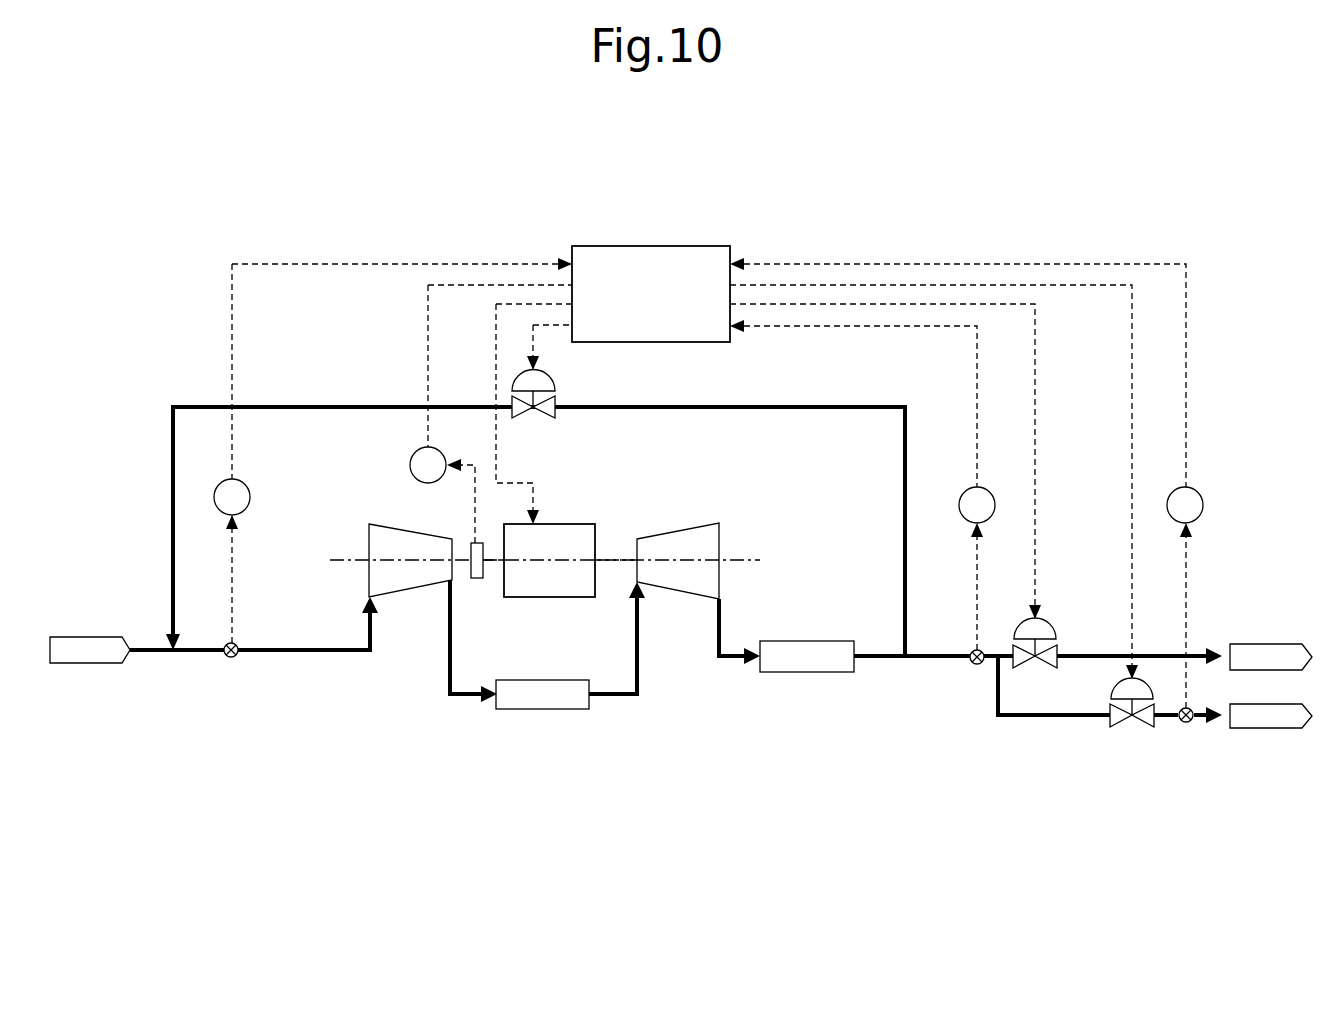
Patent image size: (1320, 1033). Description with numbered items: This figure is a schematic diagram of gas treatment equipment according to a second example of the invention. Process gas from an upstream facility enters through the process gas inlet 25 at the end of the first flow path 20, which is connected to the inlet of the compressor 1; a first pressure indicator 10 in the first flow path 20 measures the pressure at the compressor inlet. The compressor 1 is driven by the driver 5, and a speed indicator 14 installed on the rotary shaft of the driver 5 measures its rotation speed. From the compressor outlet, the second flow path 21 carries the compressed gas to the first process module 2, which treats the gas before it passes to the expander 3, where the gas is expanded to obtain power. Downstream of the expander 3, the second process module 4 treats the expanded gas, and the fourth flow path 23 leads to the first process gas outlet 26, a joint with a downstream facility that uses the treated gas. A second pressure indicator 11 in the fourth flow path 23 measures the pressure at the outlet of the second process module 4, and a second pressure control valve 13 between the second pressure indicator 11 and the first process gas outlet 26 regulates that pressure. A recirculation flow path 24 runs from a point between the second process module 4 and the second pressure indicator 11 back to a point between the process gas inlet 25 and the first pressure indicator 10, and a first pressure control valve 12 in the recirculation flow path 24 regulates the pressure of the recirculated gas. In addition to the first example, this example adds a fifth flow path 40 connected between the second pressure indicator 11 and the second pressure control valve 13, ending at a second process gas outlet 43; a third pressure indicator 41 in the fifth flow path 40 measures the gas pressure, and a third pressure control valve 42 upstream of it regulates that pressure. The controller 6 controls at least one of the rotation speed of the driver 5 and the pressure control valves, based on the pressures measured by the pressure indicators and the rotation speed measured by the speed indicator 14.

The compressor 1 is at (380, 524).
The first process module 2 is at (545, 680).
The expander 3 is at (665, 537).
The second process module 4 is at (808, 641).
The driver 5 is at (575, 524).
The controller 6 is at (648, 246).
The first pressure indicator 10 is at (250, 489).
The second pressure indicator 11 is at (993, 492).
The first pressure control valve 12 is at (556, 377).
The second pressure control valve 13 is at (1050, 619).
The speed indicator 14 is at (410, 459).
The first flow path 20 is at (283, 656).
The second flow path 21 is at (448, 662).
The fourth flow path 23 is at (940, 660).
The recirculation flow path 24 is at (352, 405).
The process gas inlet 25 is at (88, 637).
The first process gas outlet 26 is at (1270, 644).
The fifth flow path 40 is at (1062, 719).
The third pressure indicator 41 is at (1203, 493).
The third pressure control valve 42 is at (1114, 691).
The second process gas outlet 43 is at (1268, 729).